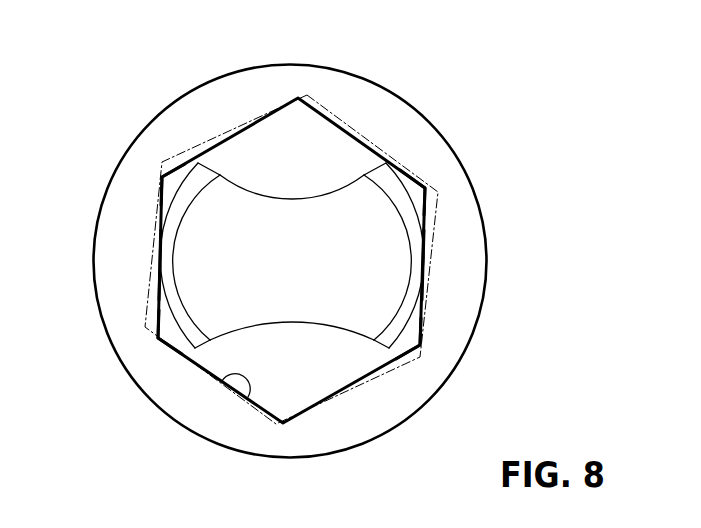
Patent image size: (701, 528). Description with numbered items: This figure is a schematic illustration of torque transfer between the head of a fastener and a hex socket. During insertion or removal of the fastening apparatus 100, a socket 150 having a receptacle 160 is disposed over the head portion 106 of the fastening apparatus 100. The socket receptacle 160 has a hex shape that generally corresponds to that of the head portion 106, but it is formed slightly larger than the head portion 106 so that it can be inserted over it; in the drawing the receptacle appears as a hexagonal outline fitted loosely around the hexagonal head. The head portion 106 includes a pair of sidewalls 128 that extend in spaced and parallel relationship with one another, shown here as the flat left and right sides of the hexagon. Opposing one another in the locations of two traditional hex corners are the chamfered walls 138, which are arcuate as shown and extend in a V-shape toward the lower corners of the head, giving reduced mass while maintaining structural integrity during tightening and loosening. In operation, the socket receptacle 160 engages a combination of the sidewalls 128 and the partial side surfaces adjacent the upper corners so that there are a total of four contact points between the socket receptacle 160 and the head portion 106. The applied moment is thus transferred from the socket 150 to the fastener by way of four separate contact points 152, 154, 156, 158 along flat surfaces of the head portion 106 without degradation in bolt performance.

The fastening apparatus 100 is at (408, 98).
The head portion 106 is at (387, 148).
The sidewalls 128 is at (160, 275).
The chamfered wall 138 is at (318, 196).
The socket 150 is at (225, 133).
The contact point 152 is at (160, 192).
The contact point 154 is at (162, 341).
The contact point 156 is at (423, 332).
The contact point 158 is at (424, 186).
The socket receptacle 160 is at (222, 380).